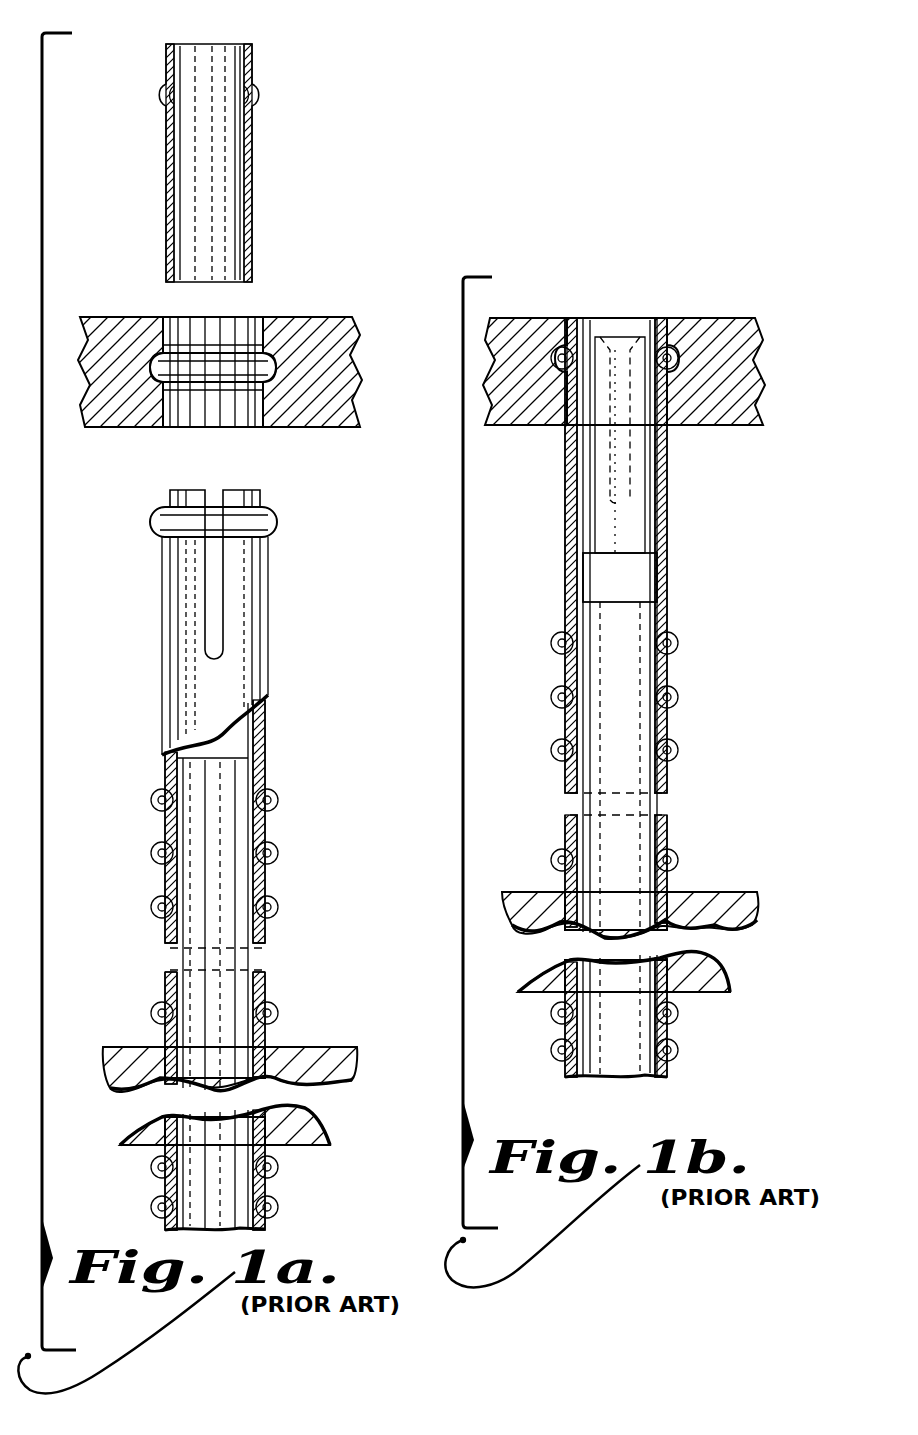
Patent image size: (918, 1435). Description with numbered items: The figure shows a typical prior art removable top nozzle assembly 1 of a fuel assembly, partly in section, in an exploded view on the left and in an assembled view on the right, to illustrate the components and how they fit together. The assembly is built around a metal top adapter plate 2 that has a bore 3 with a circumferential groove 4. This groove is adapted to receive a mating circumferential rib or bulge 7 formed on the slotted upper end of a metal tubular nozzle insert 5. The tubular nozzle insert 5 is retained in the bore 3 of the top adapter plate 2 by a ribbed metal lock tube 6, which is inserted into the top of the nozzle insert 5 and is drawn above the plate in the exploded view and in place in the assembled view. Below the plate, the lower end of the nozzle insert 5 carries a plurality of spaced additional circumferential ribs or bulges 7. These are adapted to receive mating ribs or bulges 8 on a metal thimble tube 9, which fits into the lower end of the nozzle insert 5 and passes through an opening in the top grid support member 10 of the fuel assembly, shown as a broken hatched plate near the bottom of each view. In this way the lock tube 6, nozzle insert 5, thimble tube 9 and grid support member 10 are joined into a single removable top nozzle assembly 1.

In FIG. 1A, the removable top nozzle assembly 1 is at (122, 580).
In FIG. 1B, the removable top nozzle assembly 1 is at (718, 560).
In FIG. 1A, the top adapter plate 2 is at (348, 370).
In FIG. 1B, the top adapter plate 2 is at (760, 380).
In FIG. 1A, the bore 3 is at (190, 405).
In FIG. 1B, the bore 3 is at (560, 420).
In FIG. 1A, the circumferential groove 4 is at (262, 352).
In FIG. 1A, the tubular nozzle insert 5 is at (268, 580).
In FIG. 1B, the tubular nozzle insert 5 is at (668, 478).
In FIG. 1A, the lock tube 6 is at (255, 214).
In FIG. 1A, the circumferential rib or bulge 7 is at (277, 527).
In FIG. 1B, the circumferential rib or bulge 7 is at (672, 356).
In FIG. 1A, the ribs or bulges 8 is at (175, 797).
In FIG. 1B, the ribs or bulges 8 is at (580, 645).
In FIG. 1A, the thimble tube 9 is at (262, 960).
In FIG. 1B, the thimble tube 9 is at (668, 805).
In FIG. 1A, the top grid support member 10 is at (345, 1080).
In FIG. 1B, the top grid support member 10 is at (752, 912).